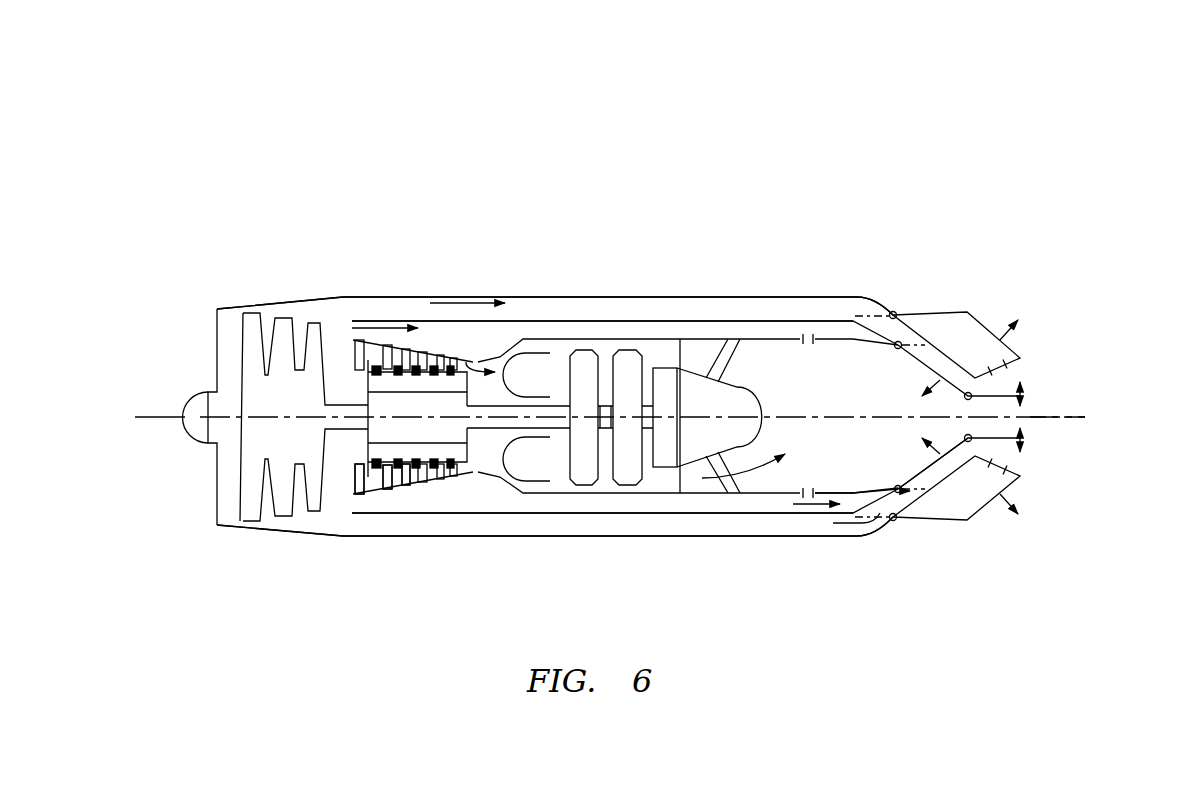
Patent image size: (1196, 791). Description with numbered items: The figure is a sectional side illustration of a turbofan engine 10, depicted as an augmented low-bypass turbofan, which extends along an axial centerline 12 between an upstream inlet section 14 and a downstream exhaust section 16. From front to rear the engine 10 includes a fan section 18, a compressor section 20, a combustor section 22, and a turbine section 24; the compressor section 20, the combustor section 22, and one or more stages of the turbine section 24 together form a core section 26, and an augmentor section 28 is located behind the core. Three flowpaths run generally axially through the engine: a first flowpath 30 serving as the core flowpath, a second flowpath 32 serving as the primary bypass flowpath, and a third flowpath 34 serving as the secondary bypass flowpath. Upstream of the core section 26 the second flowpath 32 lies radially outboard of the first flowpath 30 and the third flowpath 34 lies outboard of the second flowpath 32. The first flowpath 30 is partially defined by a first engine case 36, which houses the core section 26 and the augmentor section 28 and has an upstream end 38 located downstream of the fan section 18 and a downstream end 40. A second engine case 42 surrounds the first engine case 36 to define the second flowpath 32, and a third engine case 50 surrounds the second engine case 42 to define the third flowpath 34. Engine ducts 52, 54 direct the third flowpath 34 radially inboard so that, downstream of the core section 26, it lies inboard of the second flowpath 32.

The turbofan engine 10 is at (291, 154).
The axial centerline 12 is at (158, 415).
The inlet section 14 is at (196, 347).
The exhaust section 16 is at (1131, 356).
The fan section 18 is at (318, 285).
The compressor section 20 is at (468, 285).
The combustor section 22 is at (578, 285).
The turbine section 24 is at (742, 285).
The core section 26 is at (742, 180).
The augmentor section 28 is at (875, 285).
The first flowpath 30 is at (466, 362).
The second flowpath 32 is at (368, 325).
The third flowpath 34 is at (477, 302).
The first engine case 36 is at (840, 492).
The upstream end 38 is at (405, 492).
The downstream end 40 is at (872, 489).
The second engine case 42 is at (470, 514).
The third engine case 50 is at (548, 537).
The engine duct 52 is at (925, 328).
The engine duct 54 is at (926, 505).